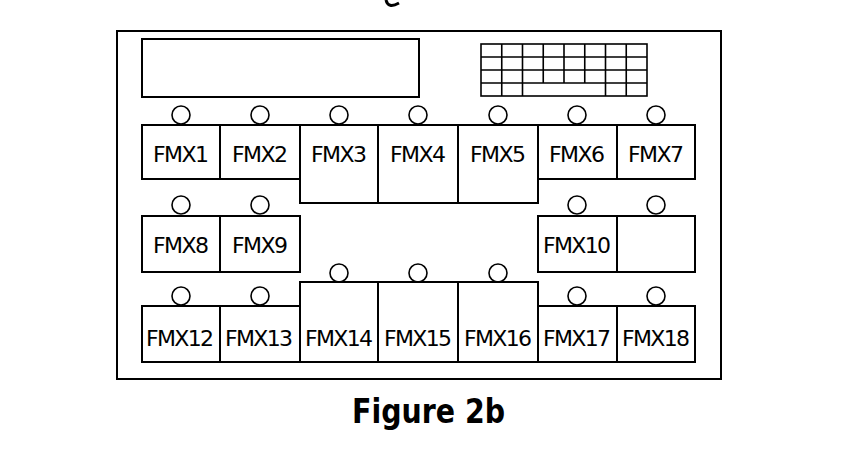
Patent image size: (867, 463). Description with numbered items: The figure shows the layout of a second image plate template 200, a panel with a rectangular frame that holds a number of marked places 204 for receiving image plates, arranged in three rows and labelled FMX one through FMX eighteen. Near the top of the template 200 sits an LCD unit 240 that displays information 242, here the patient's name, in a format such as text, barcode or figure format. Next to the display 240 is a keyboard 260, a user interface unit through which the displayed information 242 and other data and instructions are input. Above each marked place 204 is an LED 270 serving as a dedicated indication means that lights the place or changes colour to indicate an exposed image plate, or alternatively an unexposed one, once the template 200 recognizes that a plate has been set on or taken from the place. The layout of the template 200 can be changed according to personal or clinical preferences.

The second image plate template 200 is at (116, 178).
The LCD unit 240 is at (175, 39).
The displayed information 242 is at (178, 62).
The keyboard 260 is at (649, 78).
The marked place 204 is at (697, 246).
The LED 270 is at (172, 295).